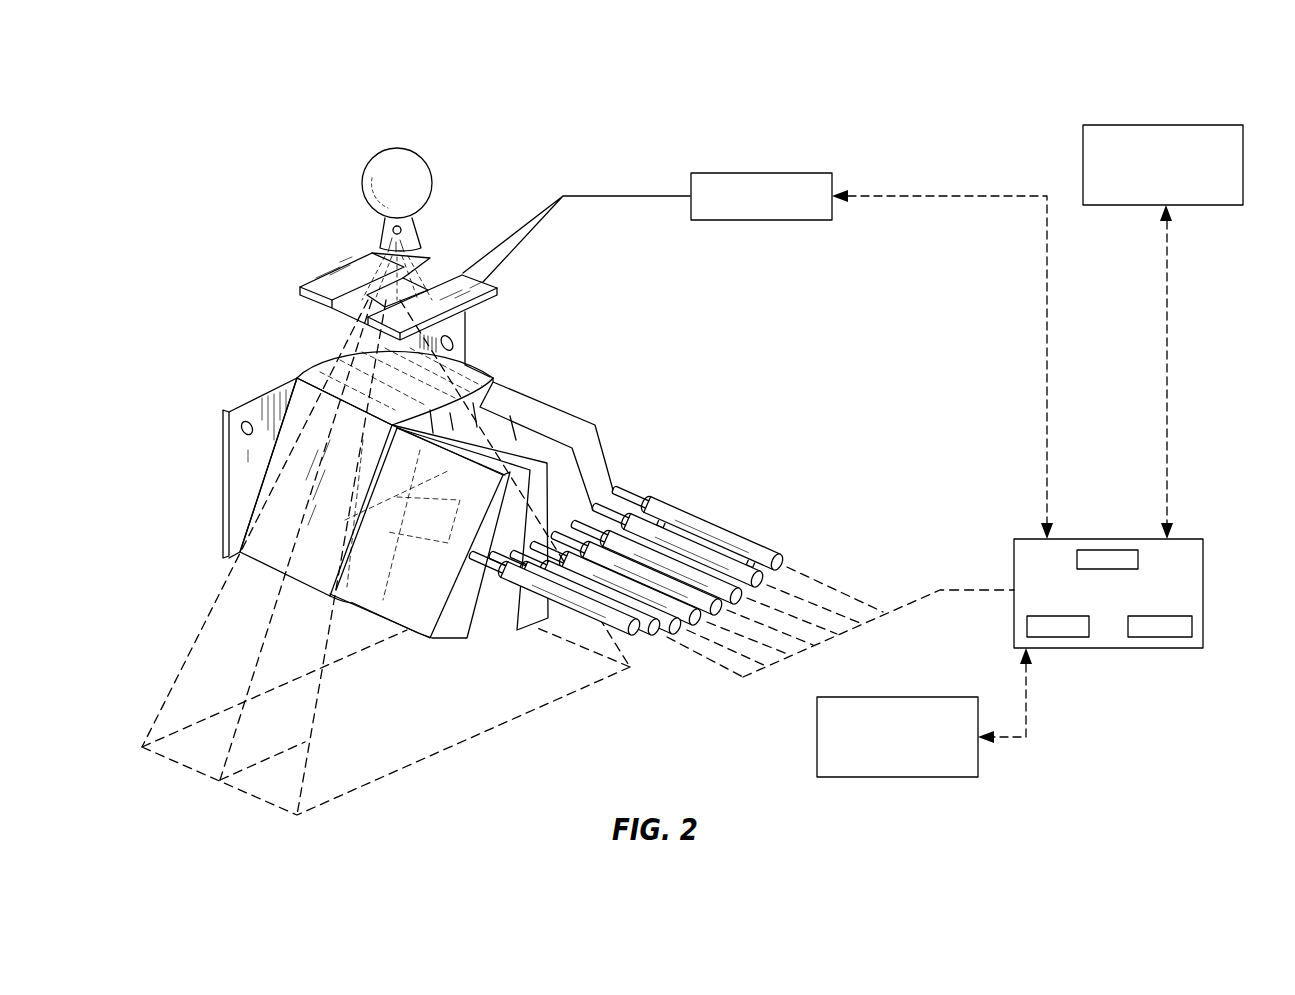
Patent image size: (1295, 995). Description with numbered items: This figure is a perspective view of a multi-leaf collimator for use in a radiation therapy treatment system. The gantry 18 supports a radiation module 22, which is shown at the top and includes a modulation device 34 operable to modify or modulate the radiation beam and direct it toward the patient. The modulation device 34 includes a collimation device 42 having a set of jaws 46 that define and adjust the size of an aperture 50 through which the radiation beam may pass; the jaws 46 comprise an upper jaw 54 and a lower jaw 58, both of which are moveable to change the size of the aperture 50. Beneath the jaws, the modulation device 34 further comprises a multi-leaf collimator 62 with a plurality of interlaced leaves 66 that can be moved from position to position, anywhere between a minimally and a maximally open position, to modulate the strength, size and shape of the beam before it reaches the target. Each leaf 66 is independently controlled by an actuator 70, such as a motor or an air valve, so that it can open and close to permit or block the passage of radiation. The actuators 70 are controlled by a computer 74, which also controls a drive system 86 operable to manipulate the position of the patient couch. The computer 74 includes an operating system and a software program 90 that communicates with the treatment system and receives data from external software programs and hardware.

The gantry 18 is at (1132, 124).
The radiation module 22 is at (390, 165).
The modulation device 34 is at (660, 315).
The collimation device 42 is at (550, 112).
The jaws 46 is at (300, 214).
The aperture 50 is at (343, 316).
The upper jaw 54 is at (315, 290).
The lower jaw 58 is at (436, 276).
The multi-leaf collimator 62 is at (497, 367).
The interlaced leaves 66 is at (612, 450).
The actuator 70 is at (720, 172).
The computer 74 is at (1203, 562).
The drive system 86 is at (913, 778).
The software program 90 is at (1150, 632).